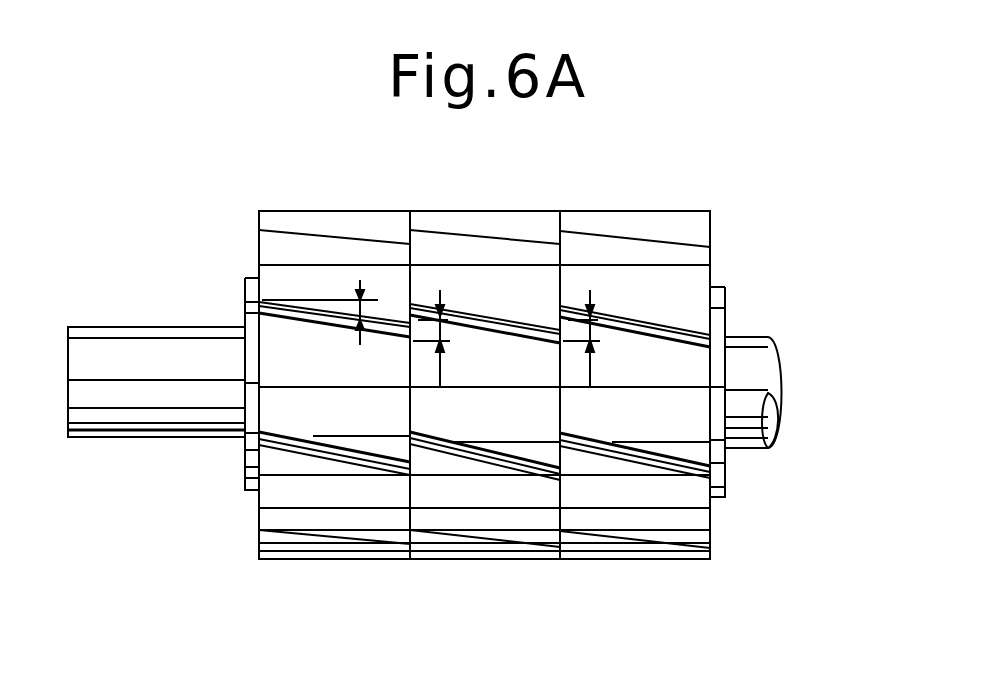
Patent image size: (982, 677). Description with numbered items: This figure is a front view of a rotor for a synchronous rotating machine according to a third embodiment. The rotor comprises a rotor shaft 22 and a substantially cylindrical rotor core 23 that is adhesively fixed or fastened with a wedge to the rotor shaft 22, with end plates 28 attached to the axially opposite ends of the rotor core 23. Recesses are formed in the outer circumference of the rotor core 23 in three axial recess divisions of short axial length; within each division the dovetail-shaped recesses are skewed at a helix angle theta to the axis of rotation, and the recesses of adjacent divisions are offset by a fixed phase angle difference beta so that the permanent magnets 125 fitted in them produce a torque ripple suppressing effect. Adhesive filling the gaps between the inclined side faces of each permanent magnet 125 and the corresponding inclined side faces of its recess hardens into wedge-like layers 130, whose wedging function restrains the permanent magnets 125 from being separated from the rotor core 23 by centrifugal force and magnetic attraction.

The rotor shaft 22 is at (158, 437).
The rotor core 23 is at (473, 323).
The end plate 28 is at (250, 286).
The permanent magnet 125 is at (310, 512).
The wedge-like layer 130 is at (375, 450).